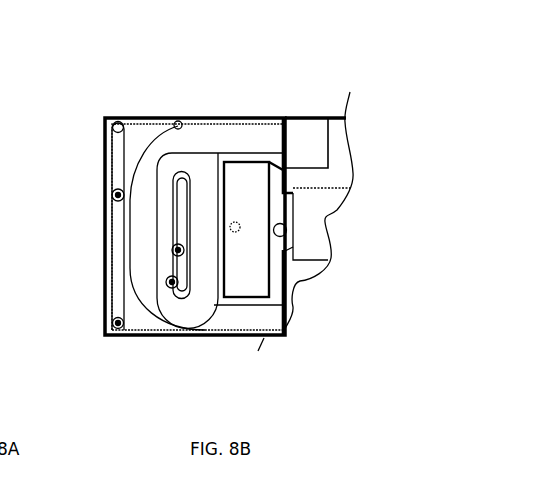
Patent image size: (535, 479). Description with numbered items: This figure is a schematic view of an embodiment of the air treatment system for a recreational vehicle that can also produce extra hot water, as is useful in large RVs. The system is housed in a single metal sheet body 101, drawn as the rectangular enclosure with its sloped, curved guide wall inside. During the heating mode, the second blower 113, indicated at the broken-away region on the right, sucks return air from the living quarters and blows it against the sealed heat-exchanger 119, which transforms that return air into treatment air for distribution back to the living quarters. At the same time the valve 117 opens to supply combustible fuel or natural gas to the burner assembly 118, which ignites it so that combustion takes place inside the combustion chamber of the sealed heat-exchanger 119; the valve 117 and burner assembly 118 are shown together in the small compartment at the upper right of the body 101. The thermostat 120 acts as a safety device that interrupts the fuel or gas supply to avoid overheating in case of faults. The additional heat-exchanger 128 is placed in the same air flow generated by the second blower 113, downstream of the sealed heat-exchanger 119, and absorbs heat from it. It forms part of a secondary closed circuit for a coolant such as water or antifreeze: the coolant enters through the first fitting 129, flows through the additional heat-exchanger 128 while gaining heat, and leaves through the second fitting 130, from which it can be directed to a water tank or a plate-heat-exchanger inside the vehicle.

The single metal sheet body 101 is at (150, 113).
The second blower 113 is at (302, 244).
The valve 117 is at (317, 127).
The burner assembly 118 is at (293, 127).
The sealed heat-exchanger 119 is at (210, 133).
The thermostat 120 is at (172, 282).
The additional heat-exchanger 128 is at (114, 324).
The first fitting 129 is at (113, 193).
The second fitting 130 is at (174, 250).